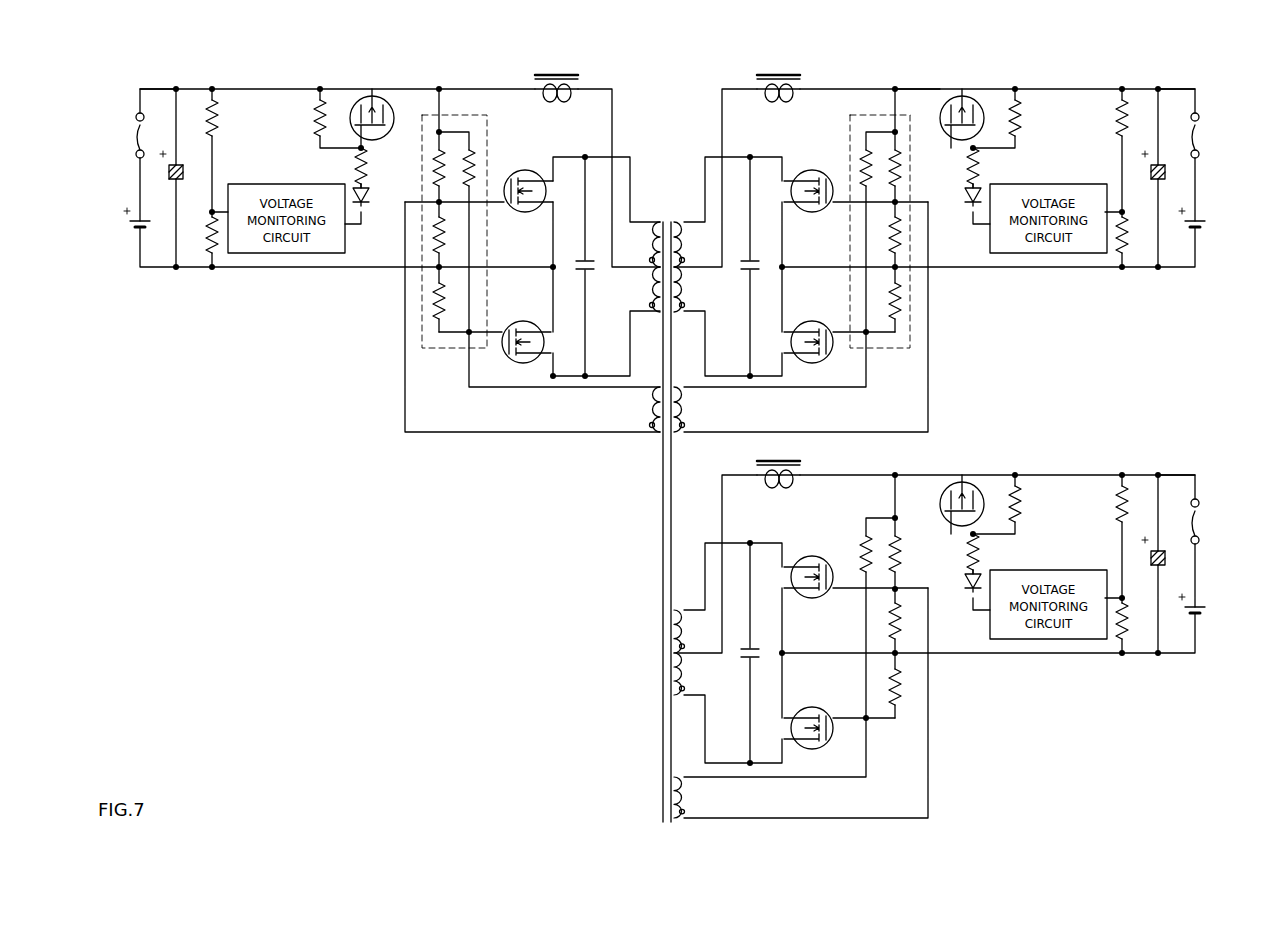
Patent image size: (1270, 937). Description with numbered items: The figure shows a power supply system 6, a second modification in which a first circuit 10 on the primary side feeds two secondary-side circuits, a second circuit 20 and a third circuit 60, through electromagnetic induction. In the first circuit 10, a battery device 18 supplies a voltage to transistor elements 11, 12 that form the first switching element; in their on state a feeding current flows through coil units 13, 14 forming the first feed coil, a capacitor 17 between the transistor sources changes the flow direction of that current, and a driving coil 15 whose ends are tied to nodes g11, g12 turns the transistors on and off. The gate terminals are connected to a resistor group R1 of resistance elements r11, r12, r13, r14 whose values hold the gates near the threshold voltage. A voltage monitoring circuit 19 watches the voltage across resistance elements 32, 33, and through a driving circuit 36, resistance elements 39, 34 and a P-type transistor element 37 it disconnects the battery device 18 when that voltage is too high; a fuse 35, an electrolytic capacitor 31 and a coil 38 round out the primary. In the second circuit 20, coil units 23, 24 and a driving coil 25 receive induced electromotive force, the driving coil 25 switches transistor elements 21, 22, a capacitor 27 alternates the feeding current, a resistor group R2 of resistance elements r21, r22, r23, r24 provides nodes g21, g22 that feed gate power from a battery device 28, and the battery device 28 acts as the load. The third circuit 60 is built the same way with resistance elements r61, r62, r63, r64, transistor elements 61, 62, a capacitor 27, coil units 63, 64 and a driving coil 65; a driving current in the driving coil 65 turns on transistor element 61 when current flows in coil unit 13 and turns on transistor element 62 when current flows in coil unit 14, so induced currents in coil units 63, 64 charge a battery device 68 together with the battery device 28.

The power supply system 6 is at (939, 48).
The first circuit 10 is at (272, 72).
The second circuit 20 is at (1062, 72).
The third circuit 60 is at (1185, 472).
The transistor element 11 is at (522, 170).
The transistor element 12 is at (522, 322).
The coil unit 13 is at (652, 222).
The coil unit 14 is at (652, 312).
The driving coil 15 is at (652, 433).
The capacitor 17 is at (584, 258).
The battery device 18 is at (133, 237).
The voltage monitoring circuit 19 is at (265, 256).
The transistor element 21 is at (810, 170).
The transistor element 22 is at (812, 322).
The coil unit 23 is at (684, 222).
The coil unit 24 is at (684, 312).
The driving coil 25 is at (684, 433).
The capacitor 27 is at (752, 258).
The battery device 28 is at (1202, 237).
The electrolytic capacitor 31 is at (175, 185).
The resistance element 32 is at (212, 112).
The resistance element 33 is at (212, 250).
The resistance element 34 is at (320, 118).
The fuse 35 is at (140, 136).
The driving circuit 36 is at (366, 198).
The transistor element 37 is at (363, 96).
The coil 38 is at (568, 74).
The resistance element 39 is at (355, 165).
The transistor element 61 is at (810, 557).
The transistor element 62 is at (812, 708).
The coil unit 63 is at (684, 610).
The coil unit 64 is at (684, 697).
The driving coil 65 is at (662, 818).
The battery device 68 is at (1202, 624).
The resistance element r11 is at (437, 165).
The resistance element r12 is at (437, 235).
The resistance element r13 is at (437, 300).
The resistance element r14 is at (470, 165).
The node g11 is at (435, 203).
The node g12 is at (471, 335).
The resistor group R1 is at (445, 355).
The resistance element r21 is at (897, 165).
The resistance element r22 is at (900, 235).
The resistance element r23 is at (900, 300).
The resistance element r24 is at (866, 165).
The node g21 is at (905, 203).
The node g22 is at (864, 335).
The resistor group R2 is at (890, 355).
The resistance element r61 is at (897, 552).
The resistance element r62 is at (900, 622).
The resistance element r63 is at (900, 688).
The resistance element r64 is at (866, 552).